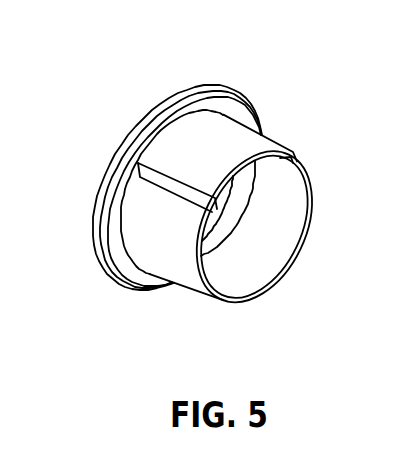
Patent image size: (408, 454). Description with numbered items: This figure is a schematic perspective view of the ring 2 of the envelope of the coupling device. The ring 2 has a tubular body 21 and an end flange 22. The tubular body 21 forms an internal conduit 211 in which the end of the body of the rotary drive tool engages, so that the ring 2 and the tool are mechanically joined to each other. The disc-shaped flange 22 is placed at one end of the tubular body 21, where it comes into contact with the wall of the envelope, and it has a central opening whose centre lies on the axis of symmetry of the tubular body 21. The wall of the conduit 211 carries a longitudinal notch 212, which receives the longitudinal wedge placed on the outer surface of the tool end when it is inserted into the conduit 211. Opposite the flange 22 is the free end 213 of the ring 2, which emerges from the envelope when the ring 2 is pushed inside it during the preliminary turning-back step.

The ring 2 is at (202, 191).
The tubular body 21 is at (235, 209).
The end flange 22 is at (213, 98).
The internal conduit 211 is at (268, 257).
The longitudinal notch 212 is at (265, 142).
The free end 213 is at (260, 293).